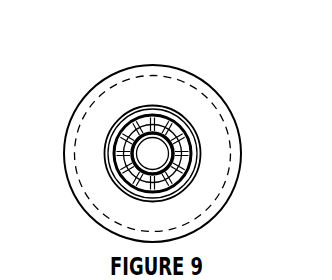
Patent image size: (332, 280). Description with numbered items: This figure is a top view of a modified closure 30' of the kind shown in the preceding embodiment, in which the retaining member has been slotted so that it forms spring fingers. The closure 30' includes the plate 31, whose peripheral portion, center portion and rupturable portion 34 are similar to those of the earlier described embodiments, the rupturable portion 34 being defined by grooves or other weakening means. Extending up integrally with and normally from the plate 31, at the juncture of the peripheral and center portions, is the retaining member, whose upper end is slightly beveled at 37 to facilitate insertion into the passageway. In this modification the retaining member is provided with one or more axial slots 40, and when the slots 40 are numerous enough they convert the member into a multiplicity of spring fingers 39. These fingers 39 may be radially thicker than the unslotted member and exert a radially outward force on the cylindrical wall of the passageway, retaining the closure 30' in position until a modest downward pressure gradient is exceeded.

The closure 30' is at (165, 153).
The plate 31 is at (93, 89).
The rupturable portion 34 is at (153, 154).
The beveled upper end 37 is at (178, 184).
The spring fingers 39 is at (172, 112).
The axial slots 40 is at (190, 168).